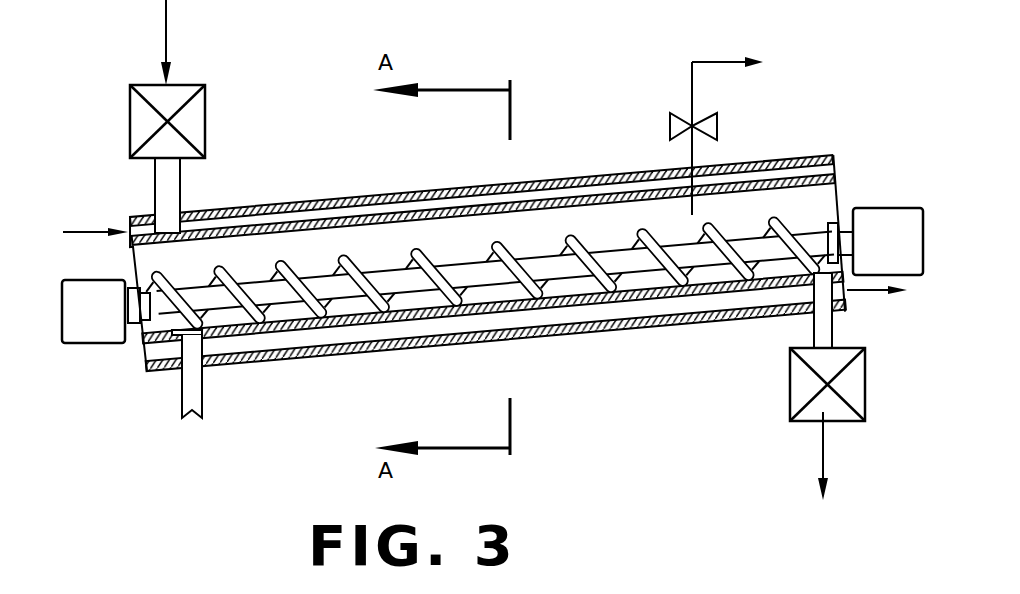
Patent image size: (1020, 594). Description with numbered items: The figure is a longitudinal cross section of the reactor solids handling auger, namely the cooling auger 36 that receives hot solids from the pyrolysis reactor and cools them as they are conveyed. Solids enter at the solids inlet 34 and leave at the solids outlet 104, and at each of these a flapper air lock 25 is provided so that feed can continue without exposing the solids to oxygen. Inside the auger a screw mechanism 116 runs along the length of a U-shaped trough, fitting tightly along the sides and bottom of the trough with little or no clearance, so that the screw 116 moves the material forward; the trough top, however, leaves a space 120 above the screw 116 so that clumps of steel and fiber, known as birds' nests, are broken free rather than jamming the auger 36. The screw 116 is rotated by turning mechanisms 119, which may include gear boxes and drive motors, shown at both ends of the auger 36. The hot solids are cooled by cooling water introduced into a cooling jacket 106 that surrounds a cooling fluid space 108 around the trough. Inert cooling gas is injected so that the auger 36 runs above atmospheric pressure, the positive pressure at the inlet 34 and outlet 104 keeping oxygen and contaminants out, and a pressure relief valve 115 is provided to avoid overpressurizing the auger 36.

The flapper air lock 25 is at (193, 86).
The solids inlet 34 is at (168, 180).
The cooling auger 36 is at (487, 234).
The solids outlet 104 is at (817, 330).
The cooling jacket 106 is at (330, 198).
The cooling fluid space 108 is at (383, 333).
The pressure relief valve 115 is at (680, 115).
The screw mechanism 116 is at (607, 290).
The turning mechanism 119 is at (88, 330).
The space above the screw 120 is at (530, 238).